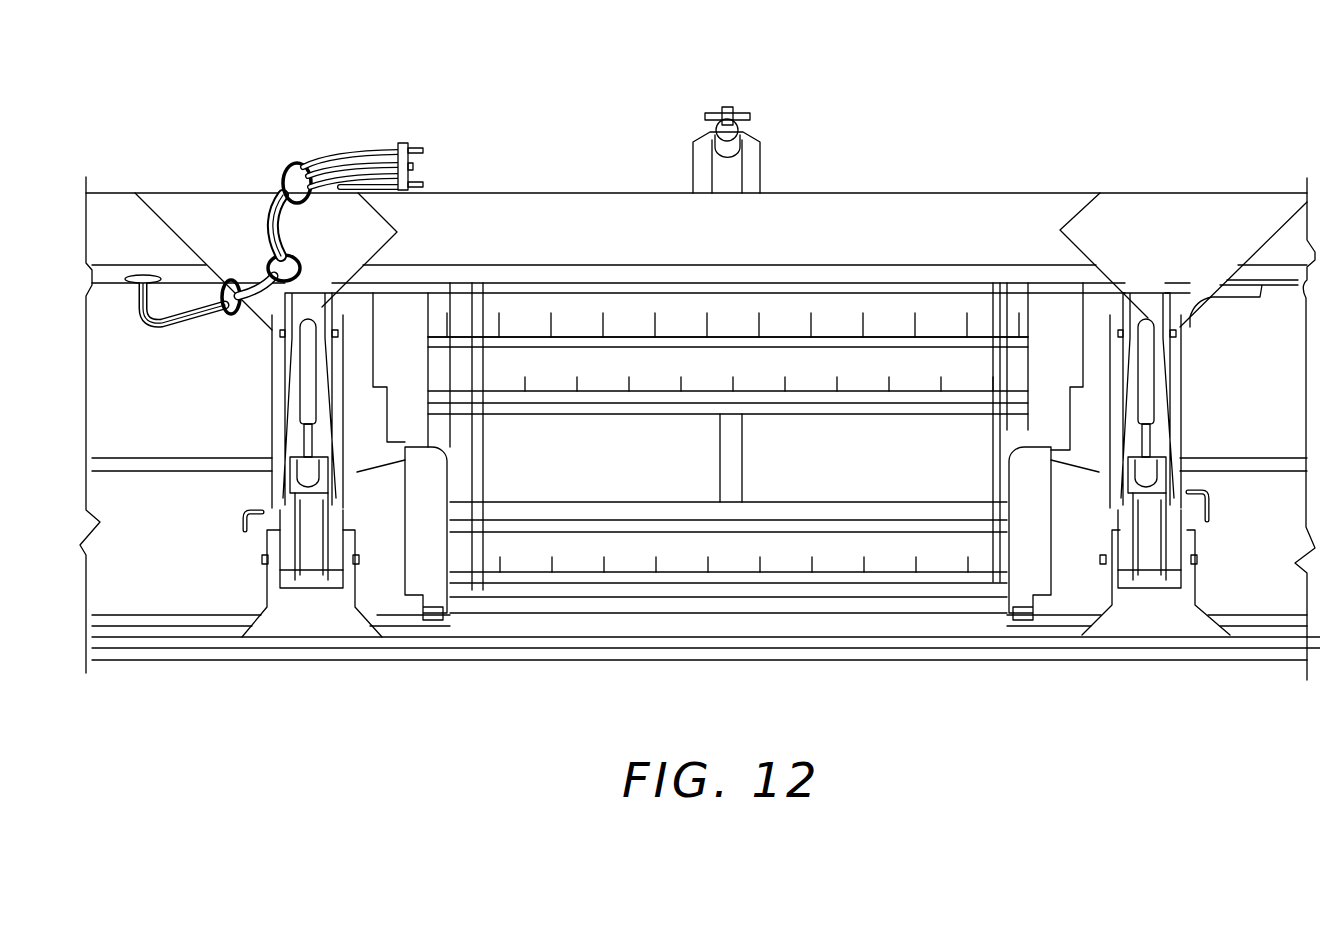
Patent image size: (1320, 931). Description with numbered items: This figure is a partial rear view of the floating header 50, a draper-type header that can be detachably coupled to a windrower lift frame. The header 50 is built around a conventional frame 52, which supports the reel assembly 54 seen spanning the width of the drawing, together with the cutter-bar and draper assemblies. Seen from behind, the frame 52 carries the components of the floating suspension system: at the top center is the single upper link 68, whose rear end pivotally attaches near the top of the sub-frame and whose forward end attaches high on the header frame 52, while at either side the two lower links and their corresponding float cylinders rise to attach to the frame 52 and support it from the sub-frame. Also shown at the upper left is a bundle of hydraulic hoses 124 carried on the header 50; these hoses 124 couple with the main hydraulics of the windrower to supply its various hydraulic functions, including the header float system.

The floating header 50 is at (1041, 160).
The frame 52 is at (918, 215).
The reel assembly 54 is at (780, 335).
The upper link 68 is at (725, 105).
The hydraulic hoses 124 is at (340, 152).